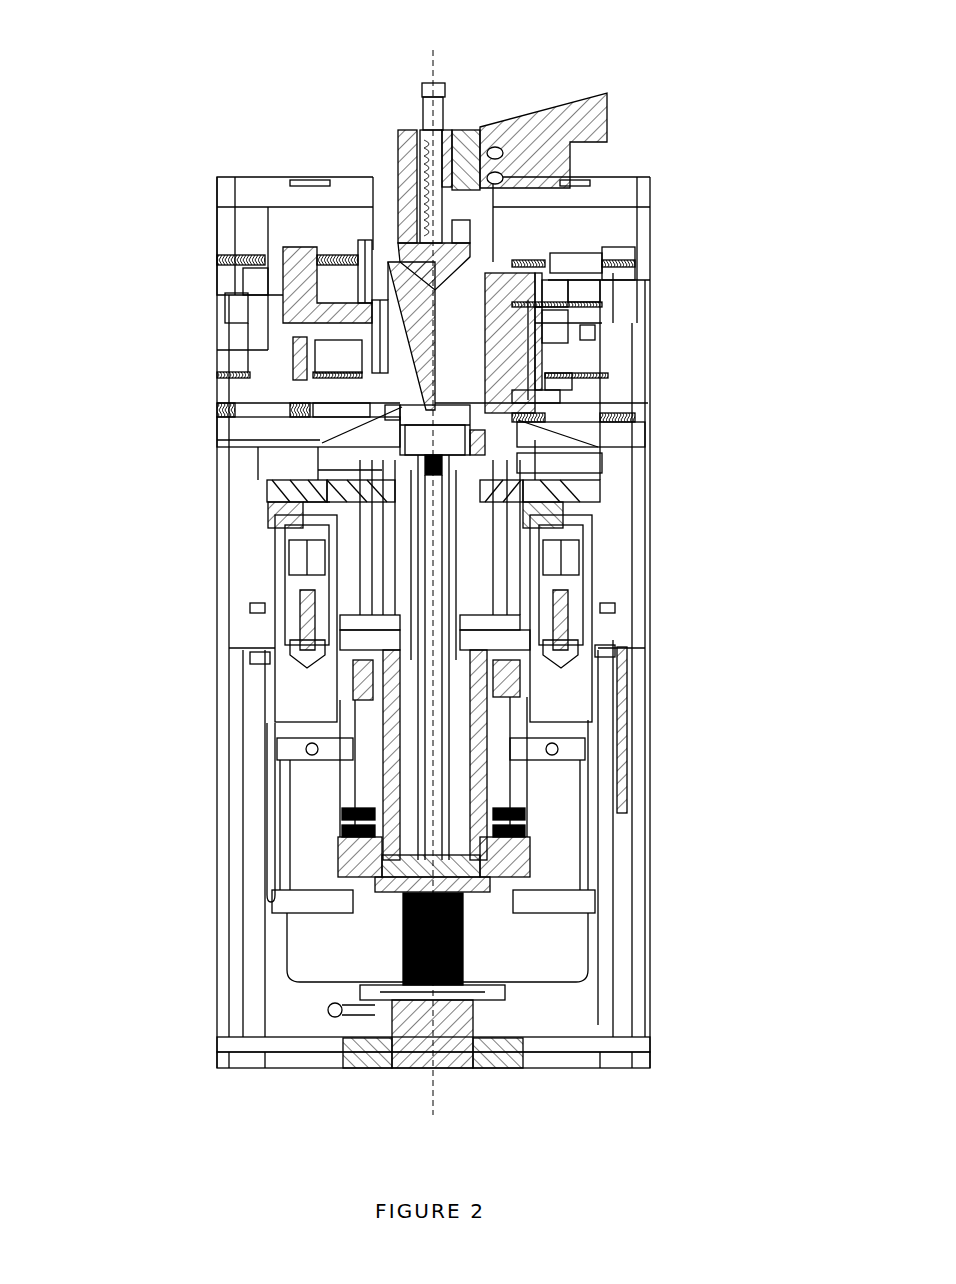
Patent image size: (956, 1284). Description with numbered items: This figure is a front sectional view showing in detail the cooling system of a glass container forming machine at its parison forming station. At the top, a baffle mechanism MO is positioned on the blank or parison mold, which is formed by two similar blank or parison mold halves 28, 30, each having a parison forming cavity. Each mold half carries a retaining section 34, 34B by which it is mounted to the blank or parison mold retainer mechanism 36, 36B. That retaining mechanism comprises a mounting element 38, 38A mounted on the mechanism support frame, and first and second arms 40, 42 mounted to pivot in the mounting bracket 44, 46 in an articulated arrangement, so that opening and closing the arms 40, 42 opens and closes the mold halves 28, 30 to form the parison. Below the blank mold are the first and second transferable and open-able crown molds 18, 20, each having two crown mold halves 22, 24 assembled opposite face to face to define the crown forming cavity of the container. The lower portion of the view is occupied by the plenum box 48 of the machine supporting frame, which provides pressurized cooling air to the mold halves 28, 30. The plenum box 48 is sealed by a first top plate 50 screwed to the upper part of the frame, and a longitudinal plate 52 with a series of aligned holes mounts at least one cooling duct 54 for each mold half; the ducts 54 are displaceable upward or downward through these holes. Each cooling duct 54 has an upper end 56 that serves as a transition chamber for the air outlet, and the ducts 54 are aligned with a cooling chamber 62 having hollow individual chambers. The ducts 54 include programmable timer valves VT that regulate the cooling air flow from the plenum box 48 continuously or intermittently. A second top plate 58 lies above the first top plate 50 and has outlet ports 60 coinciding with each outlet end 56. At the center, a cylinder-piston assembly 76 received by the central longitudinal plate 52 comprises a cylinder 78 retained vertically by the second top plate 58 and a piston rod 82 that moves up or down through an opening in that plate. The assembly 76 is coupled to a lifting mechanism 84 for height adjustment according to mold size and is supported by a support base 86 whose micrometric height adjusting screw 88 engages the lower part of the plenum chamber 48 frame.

The first transferable and open-able crown mold 18 is at (378, 448).
The second transferable and open-able crown mold 20 is at (540, 428).
The crown mold half 22 is at (405, 378).
The crown mold half 24 is at (525, 398).
The blank or parison mold half 28 is at (375, 357).
The blank or parison mold half 30 is at (513, 338).
The retaining section 34 is at (335, 300).
The retaining section 34B is at (565, 300).
The blank or parison mold retainer mechanism 36 is at (362, 300).
The blank or parison mold retainer mechanism 36B is at (537, 300).
The mounting element 38 is at (240, 228).
The mounting element 38A is at (620, 218).
The first arm 40 is at (320, 353).
The second arm 42 is at (568, 360).
The mounting bracket 44 is at (258, 285).
The mounting bracket 46 is at (590, 283).
The plenum box 48 is at (317, 962).
The first top plate 50 is at (243, 630).
The longitudinal plate 52 is at (272, 657).
The cooling duct 54 is at (272, 703).
The upper end of cooling duct 56 is at (300, 508).
The second top plate 58 is at (268, 490).
The outlet port 60 is at (327, 490).
The cooling chamber 62 is at (385, 412).
The cylinder-piston assembly 76 is at (492, 780).
The cylinder 78 is at (480, 744).
The piston rod 82 is at (253, 657).
The lifting mechanism 84 is at (370, 925).
The support base 86 is at (475, 878).
The micrometric height adjusting screw 88 is at (465, 955).
The baffle mechanism MO is at (433, 262).
The timer valve VT is at (298, 608).